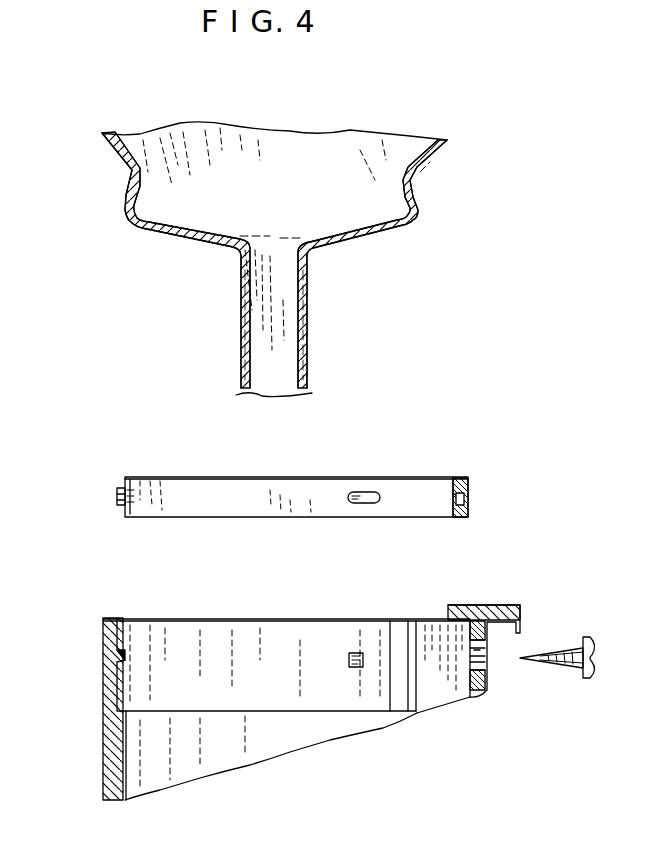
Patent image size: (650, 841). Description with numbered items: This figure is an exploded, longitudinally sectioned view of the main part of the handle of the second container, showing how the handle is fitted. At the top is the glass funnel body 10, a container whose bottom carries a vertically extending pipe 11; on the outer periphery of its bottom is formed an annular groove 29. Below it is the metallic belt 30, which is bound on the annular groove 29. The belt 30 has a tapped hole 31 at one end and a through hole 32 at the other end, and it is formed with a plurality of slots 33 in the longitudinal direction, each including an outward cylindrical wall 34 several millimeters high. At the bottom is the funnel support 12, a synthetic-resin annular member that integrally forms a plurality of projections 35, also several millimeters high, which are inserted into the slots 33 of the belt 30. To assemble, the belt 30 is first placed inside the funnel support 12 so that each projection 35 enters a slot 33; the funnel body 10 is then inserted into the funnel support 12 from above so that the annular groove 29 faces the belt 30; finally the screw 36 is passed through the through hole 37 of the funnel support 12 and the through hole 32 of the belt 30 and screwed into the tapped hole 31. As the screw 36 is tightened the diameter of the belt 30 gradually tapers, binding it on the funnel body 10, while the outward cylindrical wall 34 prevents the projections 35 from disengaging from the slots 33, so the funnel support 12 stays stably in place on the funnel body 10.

The funnel body 10 is at (370, 238).
The pipe 11 is at (308, 323).
The funnel support 12 is at (102, 753).
The annular groove 29 is at (417, 182).
The belt 30 is at (398, 476).
The tapped hole 31 is at (452, 496).
The through hole 32 is at (470, 502).
The slots 33 is at (133, 497).
The outward cylindrical wall 34 is at (118, 504).
The projections 35 is at (125, 658).
The screw 36 is at (560, 672).
The through hole 37 is at (485, 667).